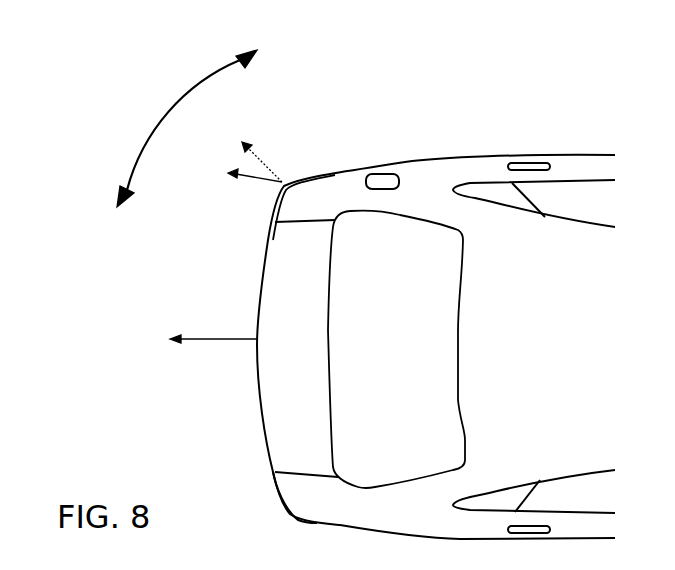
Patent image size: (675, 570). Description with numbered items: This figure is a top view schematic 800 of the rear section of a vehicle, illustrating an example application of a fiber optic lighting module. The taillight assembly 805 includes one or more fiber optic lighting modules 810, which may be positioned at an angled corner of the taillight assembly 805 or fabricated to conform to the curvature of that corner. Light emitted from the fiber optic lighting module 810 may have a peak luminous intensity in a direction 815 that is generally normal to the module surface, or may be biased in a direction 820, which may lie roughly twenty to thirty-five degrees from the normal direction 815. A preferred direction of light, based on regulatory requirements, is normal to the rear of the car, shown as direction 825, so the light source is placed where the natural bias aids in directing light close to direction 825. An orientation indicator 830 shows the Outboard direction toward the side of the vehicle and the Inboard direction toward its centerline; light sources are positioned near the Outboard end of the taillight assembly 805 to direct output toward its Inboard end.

The top view schematic 800 is at (430, 120).
The taillight assembly 805 is at (316, 176).
The fiber optic lighting module 810 is at (275, 197).
The normal direction 815 is at (260, 158).
The biased direction 820 is at (250, 178).
The direction normal to the rear of the car 825 is at (228, 340).
The orientation indicator 830 is at (178, 100).